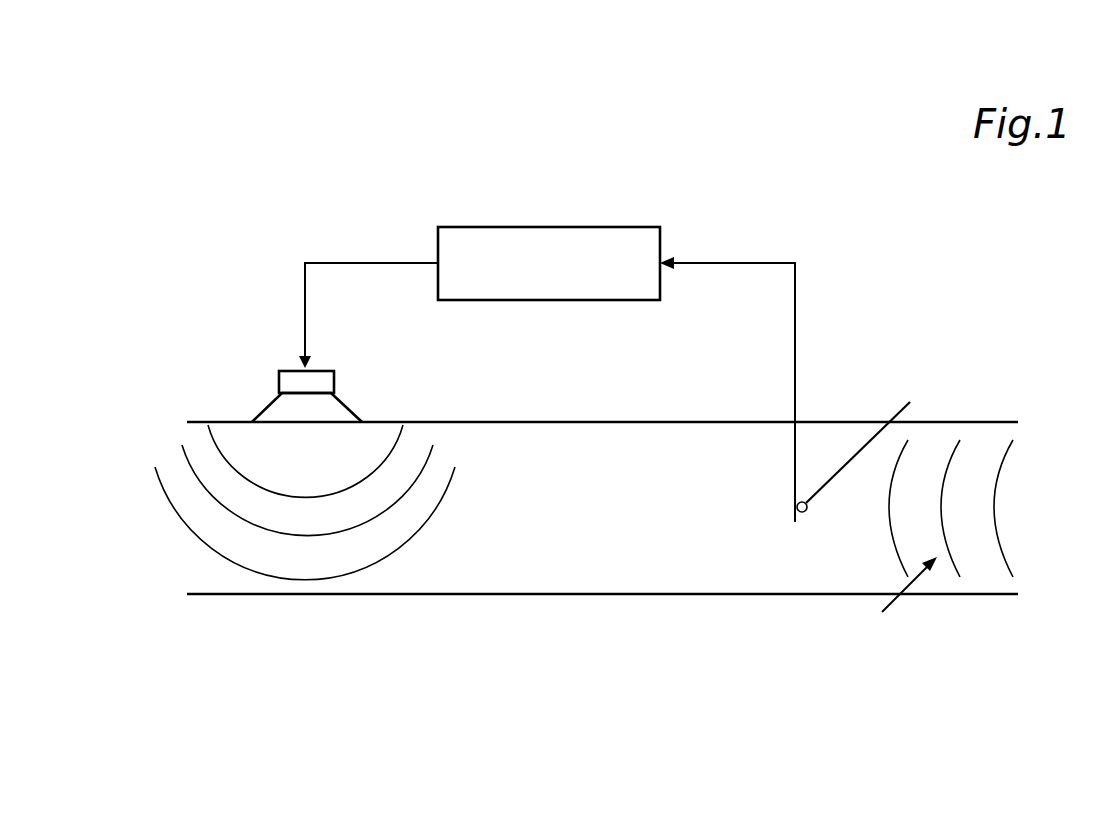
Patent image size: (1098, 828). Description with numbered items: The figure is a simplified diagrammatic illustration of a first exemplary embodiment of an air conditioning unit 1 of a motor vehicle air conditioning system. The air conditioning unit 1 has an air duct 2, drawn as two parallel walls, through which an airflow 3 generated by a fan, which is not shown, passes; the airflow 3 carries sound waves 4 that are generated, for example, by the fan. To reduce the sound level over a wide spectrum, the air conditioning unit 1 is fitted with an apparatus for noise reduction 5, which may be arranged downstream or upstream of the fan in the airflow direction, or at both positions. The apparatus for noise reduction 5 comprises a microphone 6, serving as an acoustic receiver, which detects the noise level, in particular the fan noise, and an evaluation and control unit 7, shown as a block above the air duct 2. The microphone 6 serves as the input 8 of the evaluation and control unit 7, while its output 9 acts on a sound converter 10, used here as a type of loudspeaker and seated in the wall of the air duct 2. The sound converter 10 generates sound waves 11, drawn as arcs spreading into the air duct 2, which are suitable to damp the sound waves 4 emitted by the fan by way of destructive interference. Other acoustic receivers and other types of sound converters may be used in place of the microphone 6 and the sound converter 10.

The air conditioning unit 1 is at (780, 107).
The air duct 2 is at (705, 594).
The airflow 3 is at (889, 618).
The sound waves 4 is at (993, 493).
The apparatus for noise reduction 5 is at (559, 189).
The microphone 6 is at (869, 435).
The evaluation and control unit 7 is at (612, 247).
The input 8 is at (665, 253).
The output 9 is at (436, 260).
The sound converter 10 is at (322, 413).
The sound waves 11 is at (353, 543).